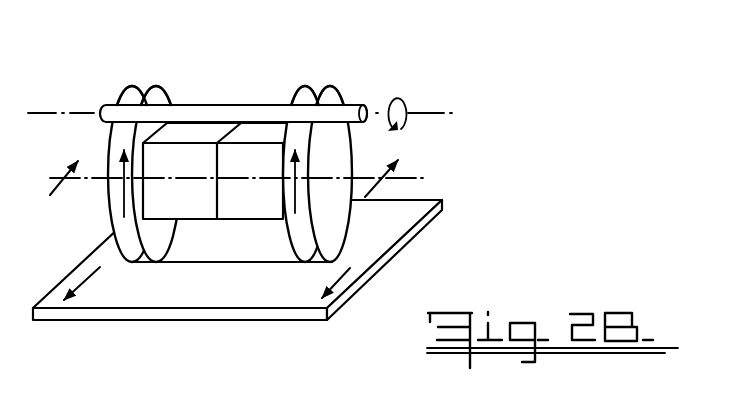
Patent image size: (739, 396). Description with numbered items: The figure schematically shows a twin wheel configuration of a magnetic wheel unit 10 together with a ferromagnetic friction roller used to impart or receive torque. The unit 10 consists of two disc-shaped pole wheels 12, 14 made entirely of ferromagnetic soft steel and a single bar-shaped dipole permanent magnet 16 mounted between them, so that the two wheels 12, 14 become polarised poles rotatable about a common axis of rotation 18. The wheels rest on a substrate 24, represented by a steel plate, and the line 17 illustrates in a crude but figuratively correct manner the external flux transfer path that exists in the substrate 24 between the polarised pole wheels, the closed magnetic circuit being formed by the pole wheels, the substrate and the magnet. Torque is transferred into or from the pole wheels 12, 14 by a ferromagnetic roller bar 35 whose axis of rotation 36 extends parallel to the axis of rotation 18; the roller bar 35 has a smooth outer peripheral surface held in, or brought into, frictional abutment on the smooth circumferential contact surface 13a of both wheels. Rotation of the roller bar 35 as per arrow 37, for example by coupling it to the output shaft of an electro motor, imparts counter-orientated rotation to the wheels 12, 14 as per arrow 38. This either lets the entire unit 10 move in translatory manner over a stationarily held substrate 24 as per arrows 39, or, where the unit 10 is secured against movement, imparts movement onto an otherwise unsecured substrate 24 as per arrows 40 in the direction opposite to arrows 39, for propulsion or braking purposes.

The magnetic wheel unit 10 is at (89, 213).
The disc-shaped wheel 12 is at (137, 253).
The circumferential contact surface 13a is at (138, 100).
The disc-shaped wheel 14 is at (333, 238).
The dipole permanent magnet 16 is at (203, 203).
The external flux transfer path 17 is at (245, 265).
The axis of rotation 18 is at (402, 177).
The substrate 24 is at (388, 256).
The ferromagnetic roller bar 35 is at (246, 112).
The axis of rotation 36 is at (388, 107).
The arrow 37 is at (408, 106).
The arrow 38 is at (297, 195).
The arrows 39 is at (53, 187).
The arrows 40 is at (352, 297).